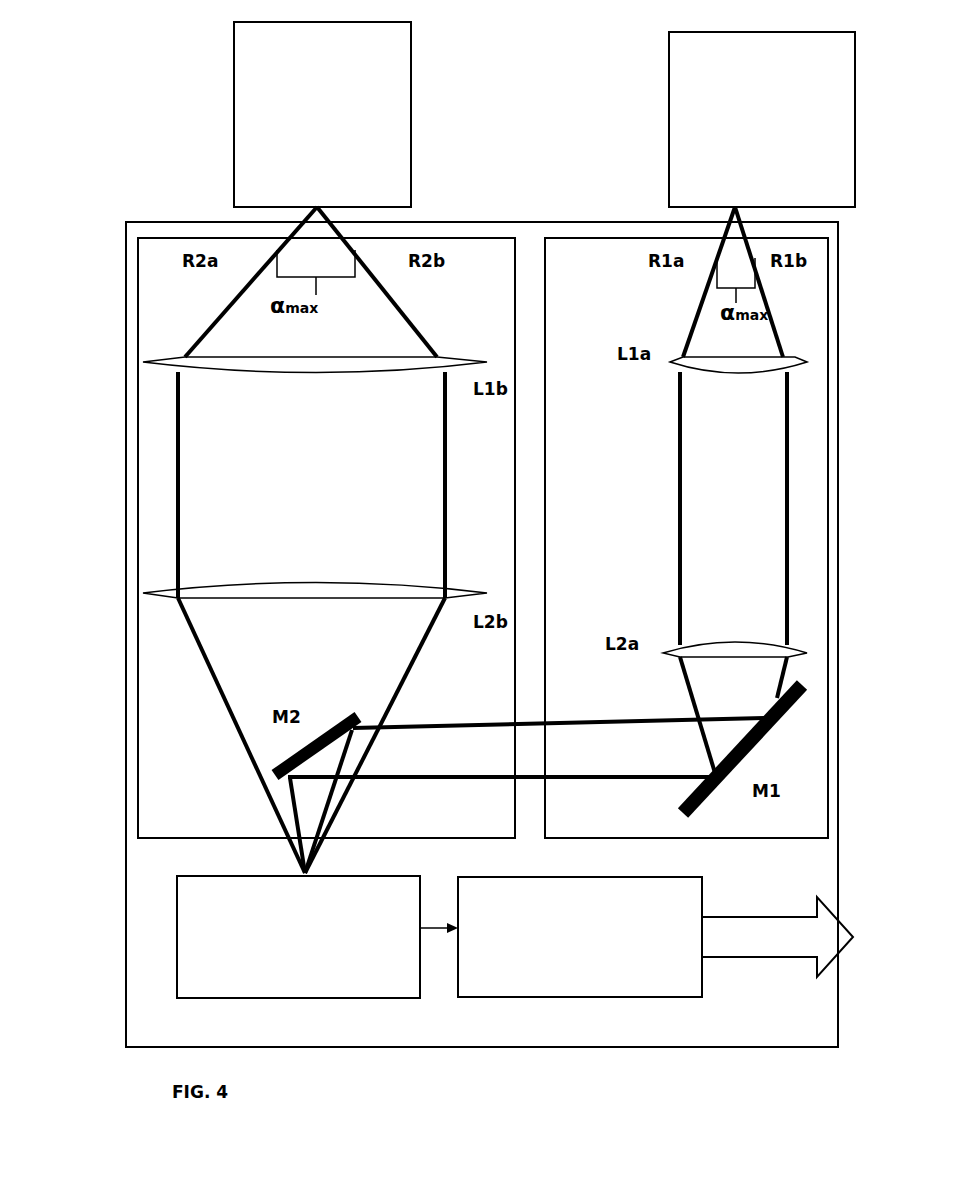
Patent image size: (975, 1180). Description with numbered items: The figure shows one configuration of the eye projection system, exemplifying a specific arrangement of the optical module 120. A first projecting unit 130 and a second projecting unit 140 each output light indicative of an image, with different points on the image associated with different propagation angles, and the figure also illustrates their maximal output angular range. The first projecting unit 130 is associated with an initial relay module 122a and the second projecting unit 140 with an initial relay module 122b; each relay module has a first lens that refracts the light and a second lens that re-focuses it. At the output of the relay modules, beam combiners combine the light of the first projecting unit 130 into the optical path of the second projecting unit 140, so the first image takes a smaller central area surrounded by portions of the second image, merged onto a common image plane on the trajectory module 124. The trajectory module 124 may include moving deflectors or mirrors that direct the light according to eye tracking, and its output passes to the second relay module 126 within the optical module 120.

The optical module 120 is at (858, 320).
The relay module 122a is at (822, 495).
The relay module 122b is at (155, 557).
The trajectory module 124 is at (298, 937).
The second relay module 126 is at (580, 937).
The first projecting unit 130 is at (762, 119).
The second projecting unit 140 is at (322, 114).